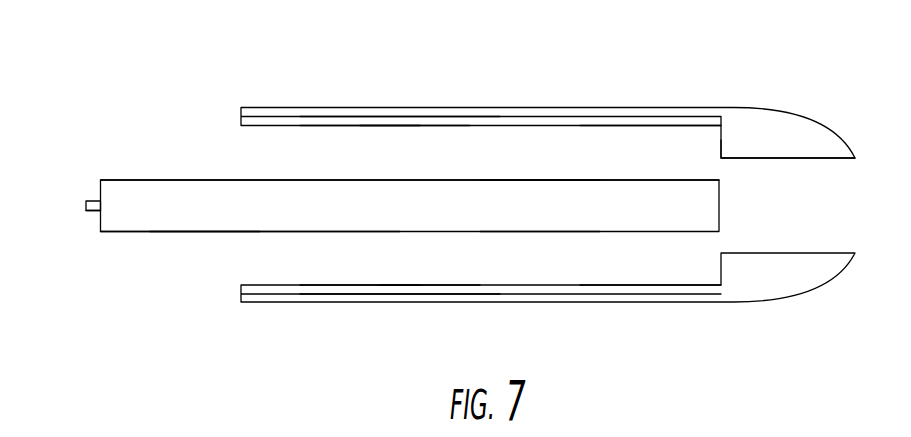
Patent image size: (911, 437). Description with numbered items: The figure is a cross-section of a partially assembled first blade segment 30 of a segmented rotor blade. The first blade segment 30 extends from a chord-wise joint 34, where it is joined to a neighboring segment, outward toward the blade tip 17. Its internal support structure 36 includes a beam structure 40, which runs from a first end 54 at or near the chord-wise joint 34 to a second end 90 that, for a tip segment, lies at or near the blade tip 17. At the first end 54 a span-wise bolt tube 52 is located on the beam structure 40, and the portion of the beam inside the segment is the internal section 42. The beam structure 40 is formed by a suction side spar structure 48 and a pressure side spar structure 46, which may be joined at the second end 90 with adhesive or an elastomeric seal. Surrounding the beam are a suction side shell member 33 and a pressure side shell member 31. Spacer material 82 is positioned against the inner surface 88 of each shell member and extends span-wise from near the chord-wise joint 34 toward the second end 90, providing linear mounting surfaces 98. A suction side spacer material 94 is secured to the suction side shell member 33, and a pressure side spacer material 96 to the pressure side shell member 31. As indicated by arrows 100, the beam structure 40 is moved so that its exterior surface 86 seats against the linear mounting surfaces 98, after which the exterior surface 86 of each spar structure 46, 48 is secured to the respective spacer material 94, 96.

The first blade segment 30 is at (68, 67).
The chord-wise joint 34 is at (173, 93).
The beam structure 40 is at (122, 188).
The suction side spar structure 48 is at (167, 180).
The internal section 42 is at (238, 167).
The first end 54 is at (80, 203).
The bolt tube 52 is at (95, 212).
The internal support structure 36 is at (120, 232).
The pressure side spar structure 46 is at (207, 232).
The suction side shell member 33 is at (356, 108).
The pressure side shell member 31 is at (555, 302).
The inner surface 88 is at (422, 117).
The spacer material 82 is at (342, 126).
The suction side spacer material 94 is at (392, 126).
The pressure side spacer material 96 is at (410, 286).
The arrows 100 is at (479, 126).
The exterior surface 86 is at (535, 178).
The linear mounting surface 98 is at (632, 127).
The second end 90 is at (735, 215).
The blade tip 17 is at (877, 213).